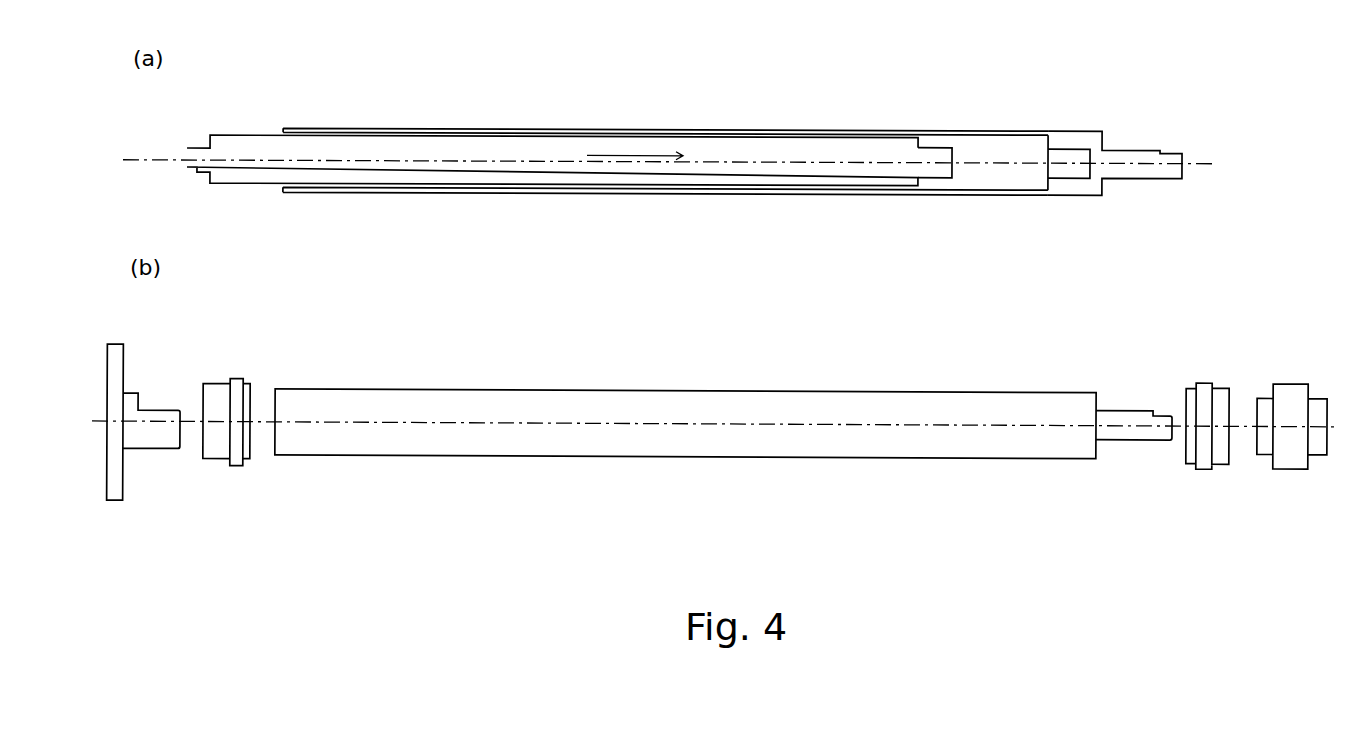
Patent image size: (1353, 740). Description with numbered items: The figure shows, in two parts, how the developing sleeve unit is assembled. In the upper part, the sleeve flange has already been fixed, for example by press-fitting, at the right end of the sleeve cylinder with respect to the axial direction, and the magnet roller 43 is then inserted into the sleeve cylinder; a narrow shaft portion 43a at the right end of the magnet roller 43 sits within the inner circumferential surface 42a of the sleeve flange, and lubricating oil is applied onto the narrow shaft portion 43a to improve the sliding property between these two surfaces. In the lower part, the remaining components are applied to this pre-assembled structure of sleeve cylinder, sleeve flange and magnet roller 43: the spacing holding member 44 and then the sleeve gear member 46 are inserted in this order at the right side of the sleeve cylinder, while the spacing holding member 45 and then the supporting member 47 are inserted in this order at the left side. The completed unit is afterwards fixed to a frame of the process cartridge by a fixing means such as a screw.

The inner circumferential surface 42a is at (1053, 150).
The magnet roller 43 is at (903, 147).
The narrow shaft portion 43a is at (940, 152).
The spacing holding member 44 is at (1207, 378).
The spacing holding member 45 is at (237, 378).
The sleeve gear member 46 is at (1290, 464).
The supporting member 47 is at (133, 393).